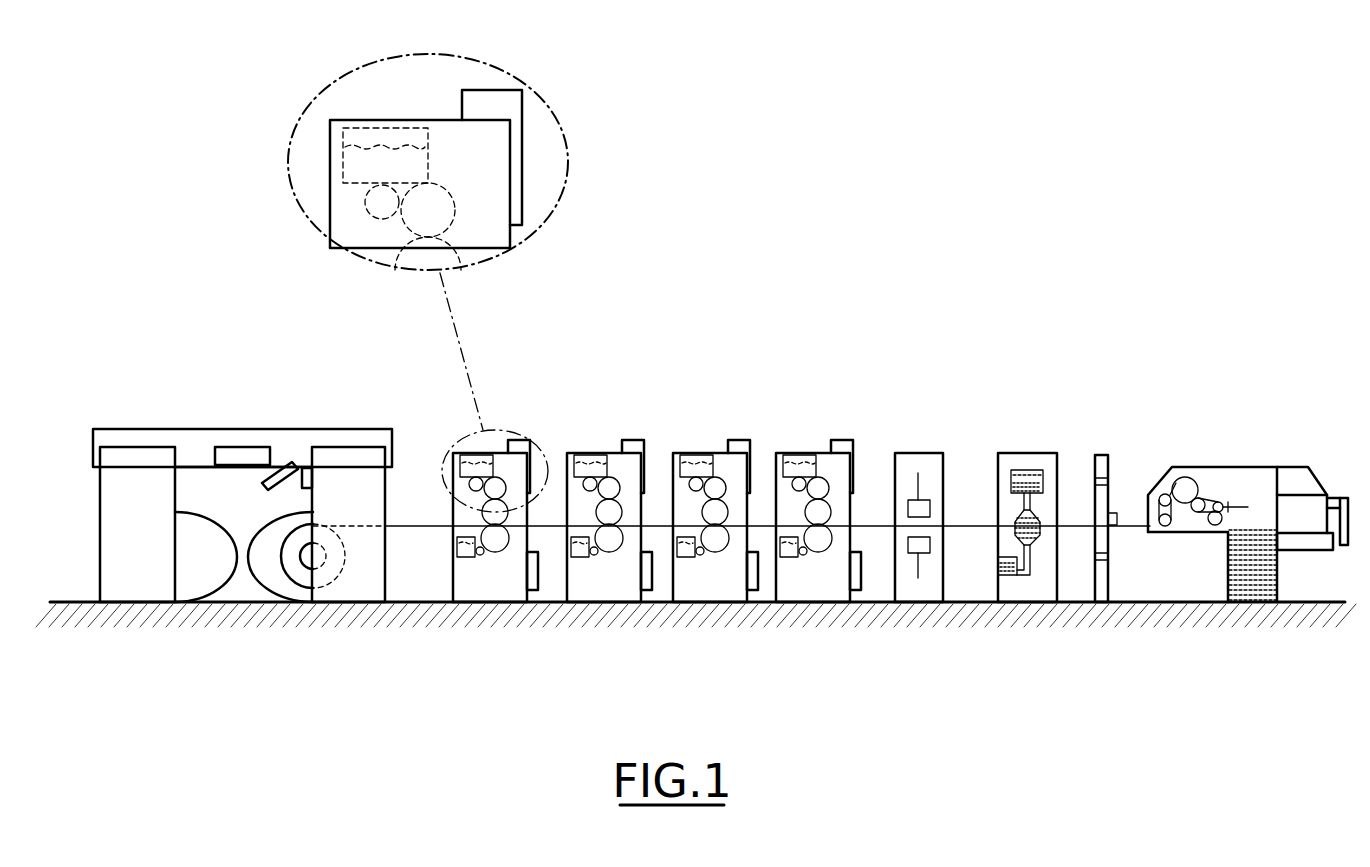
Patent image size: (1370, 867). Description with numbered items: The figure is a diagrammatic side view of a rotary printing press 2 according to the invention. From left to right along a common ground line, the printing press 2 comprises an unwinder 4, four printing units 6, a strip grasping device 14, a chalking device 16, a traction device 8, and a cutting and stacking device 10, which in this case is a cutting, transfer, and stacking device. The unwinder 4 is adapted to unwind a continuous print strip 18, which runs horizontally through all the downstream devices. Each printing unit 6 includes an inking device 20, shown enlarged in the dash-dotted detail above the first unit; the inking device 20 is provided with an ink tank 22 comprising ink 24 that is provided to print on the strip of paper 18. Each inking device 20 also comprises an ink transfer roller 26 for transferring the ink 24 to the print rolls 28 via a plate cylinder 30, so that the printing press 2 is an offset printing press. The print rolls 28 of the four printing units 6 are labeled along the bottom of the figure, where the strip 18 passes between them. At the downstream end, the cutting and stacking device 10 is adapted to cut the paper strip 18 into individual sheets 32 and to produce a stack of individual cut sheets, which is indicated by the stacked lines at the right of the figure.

The printing press 2 is at (1250, 372).
The unwinder 4 is at (207, 408).
The printing units 6 is at (810, 447).
The traction device 8 is at (1108, 440).
The cutting and stacking device 10 is at (1255, 445).
The strip grasping device 14 is at (907, 452).
The chalking device 16 is at (1030, 442).
The print strip 18 is at (433, 523).
The inking device 20 is at (466, 234).
The ink tank 22 is at (340, 165).
The ink 24 is at (385, 155).
The ink transfer roller 26 is at (364, 205).
The print rolls 28 is at (396, 258).
The plate cylinder 30 is at (441, 188).
The individual sheets 32 is at (1277, 588).